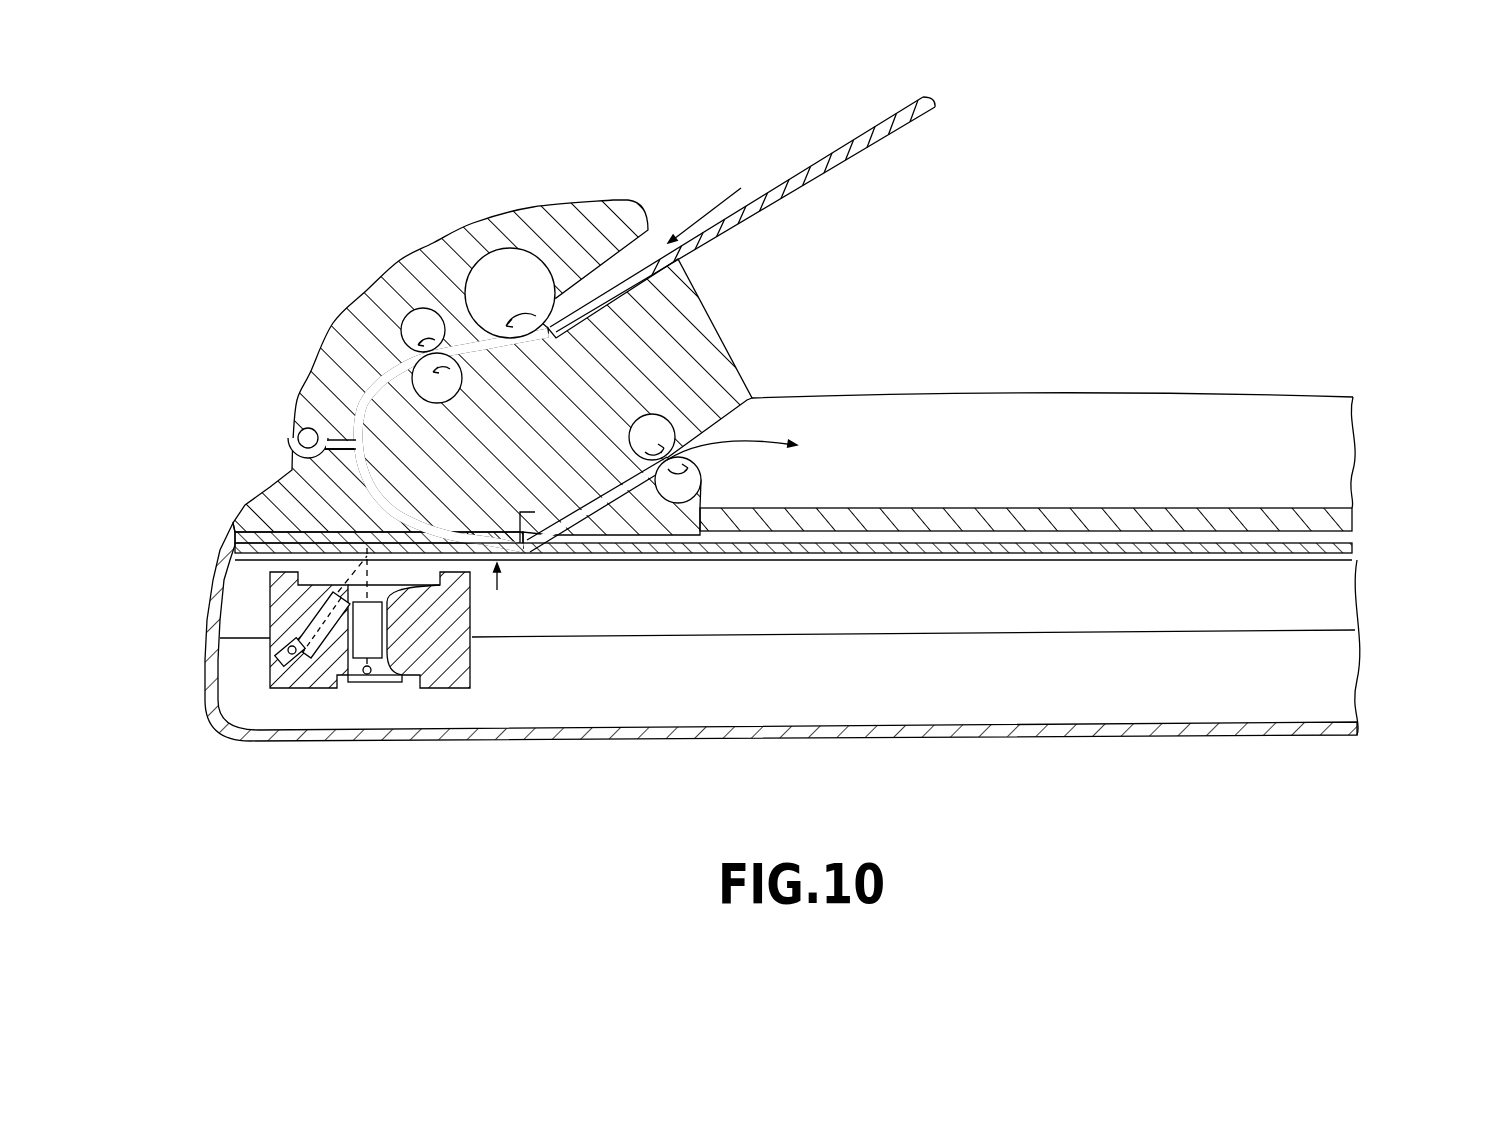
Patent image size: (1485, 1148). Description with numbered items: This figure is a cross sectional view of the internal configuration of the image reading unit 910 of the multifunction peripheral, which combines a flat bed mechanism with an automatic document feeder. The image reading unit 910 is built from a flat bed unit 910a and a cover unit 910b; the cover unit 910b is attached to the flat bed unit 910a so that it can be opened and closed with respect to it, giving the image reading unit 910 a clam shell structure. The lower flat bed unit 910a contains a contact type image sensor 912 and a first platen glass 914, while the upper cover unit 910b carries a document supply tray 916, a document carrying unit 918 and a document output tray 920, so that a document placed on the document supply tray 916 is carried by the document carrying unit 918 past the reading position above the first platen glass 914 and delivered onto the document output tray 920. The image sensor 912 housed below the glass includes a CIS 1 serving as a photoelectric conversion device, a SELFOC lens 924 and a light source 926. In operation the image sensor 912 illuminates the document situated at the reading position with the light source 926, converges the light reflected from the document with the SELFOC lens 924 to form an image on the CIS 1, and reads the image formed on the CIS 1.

The image reading unit 910 is at (1164, 292).
The flat bed unit 910a is at (1333, 663).
The cover unit 910b is at (1325, 448).
The contact type image sensor 912 is at (292, 606).
The first platen glass 914 is at (512, 552).
The document supply tray 916 is at (797, 187).
The document carrying unit 918 is at (353, 326).
The document output tray 920 is at (893, 507).
The SELFOC lens 924 is at (346, 682).
The light source 926 is at (283, 645).
The CIS 1 is at (367, 680).